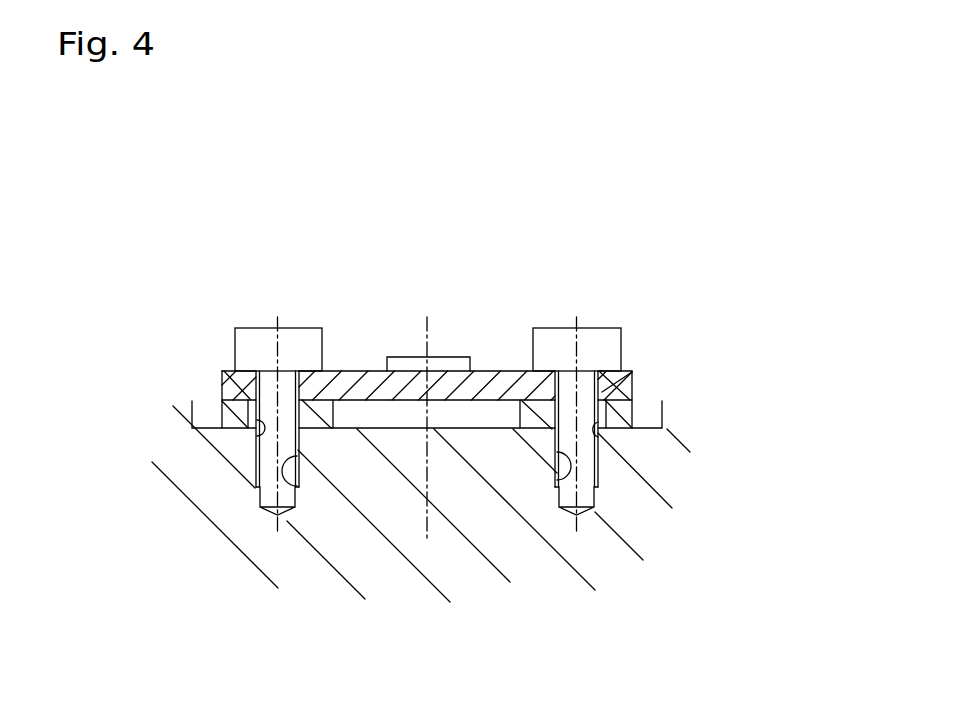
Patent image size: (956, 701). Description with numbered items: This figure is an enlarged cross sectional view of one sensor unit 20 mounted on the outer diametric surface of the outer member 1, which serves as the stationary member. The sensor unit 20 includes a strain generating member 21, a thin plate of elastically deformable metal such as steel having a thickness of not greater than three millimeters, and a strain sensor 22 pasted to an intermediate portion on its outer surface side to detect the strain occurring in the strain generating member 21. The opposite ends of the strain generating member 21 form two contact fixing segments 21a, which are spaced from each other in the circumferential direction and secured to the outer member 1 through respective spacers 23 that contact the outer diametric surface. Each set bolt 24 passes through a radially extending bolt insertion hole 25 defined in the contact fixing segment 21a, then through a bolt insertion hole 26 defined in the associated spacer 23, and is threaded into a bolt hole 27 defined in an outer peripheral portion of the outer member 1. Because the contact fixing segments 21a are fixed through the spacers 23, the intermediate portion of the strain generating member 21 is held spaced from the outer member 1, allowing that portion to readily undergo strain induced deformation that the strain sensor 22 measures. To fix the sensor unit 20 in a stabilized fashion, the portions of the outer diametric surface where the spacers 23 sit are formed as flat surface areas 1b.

The outer member 1 is at (728, 456).
The flat surface area 1b is at (368, 428).
The sensor unit 20 is at (301, 264).
The strain generating member 21 is at (507, 371).
The contact fixing segment 21a is at (300, 403).
The strain sensor 22 is at (440, 357).
The spacer 23 is at (222, 420).
The set bolt 24 is at (253, 327).
The bolt insertion hole 25 is at (266, 385).
The bolt insertion hole 26 is at (255, 443).
The bolt hole 27 is at (283, 517).